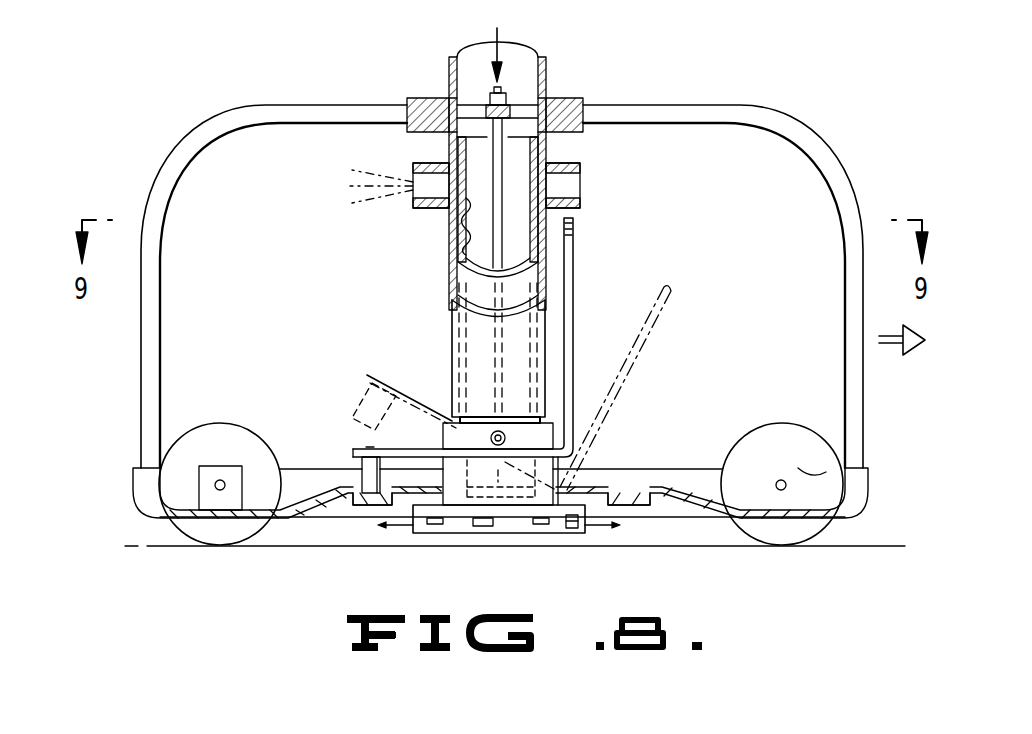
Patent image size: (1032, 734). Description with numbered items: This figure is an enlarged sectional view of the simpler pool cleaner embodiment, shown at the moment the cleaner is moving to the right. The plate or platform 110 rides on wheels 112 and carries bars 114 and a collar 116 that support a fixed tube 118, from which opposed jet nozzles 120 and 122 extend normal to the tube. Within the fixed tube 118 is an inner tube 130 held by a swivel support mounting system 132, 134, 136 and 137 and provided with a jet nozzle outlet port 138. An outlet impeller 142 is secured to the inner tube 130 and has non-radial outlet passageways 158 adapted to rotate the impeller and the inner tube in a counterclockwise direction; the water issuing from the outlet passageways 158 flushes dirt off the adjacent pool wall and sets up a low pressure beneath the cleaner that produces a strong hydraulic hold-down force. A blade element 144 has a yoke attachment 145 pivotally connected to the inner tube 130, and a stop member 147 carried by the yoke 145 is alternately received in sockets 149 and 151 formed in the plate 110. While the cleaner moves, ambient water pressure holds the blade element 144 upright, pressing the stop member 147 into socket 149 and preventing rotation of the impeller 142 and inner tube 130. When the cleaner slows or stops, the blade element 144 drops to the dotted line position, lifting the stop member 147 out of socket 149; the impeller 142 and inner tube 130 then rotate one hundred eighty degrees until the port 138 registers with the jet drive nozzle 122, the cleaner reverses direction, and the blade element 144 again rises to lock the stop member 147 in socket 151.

The plate or platform 110 is at (672, 490).
The wheels 112 is at (216, 425).
The bars 114 is at (772, 121).
The collar 116 is at (565, 100).
The fixed tube 118 is at (455, 331).
The jet nozzle 120 is at (420, 167).
The jet nozzle 122 is at (582, 170).
The inner tube 130 is at (460, 252).
The swivel support mounting system 132 is at (465, 110).
The swivel support mounting system 134 is at (562, 488).
The swivel support mounting system 136 is at (496, 256).
The swivel support mounting system 137 is at (502, 92).
The jet nozzle outlet port 138 is at (456, 232).
The outlet impeller 142 is at (553, 534).
The blade element 144 is at (575, 271).
The yoke attachment 145 is at (407, 449).
The stop member 147 is at (360, 462).
The socket 149 is at (360, 500).
The socket 151 is at (632, 501).
The non-radial outlet passageways 158 is at (530, 528).